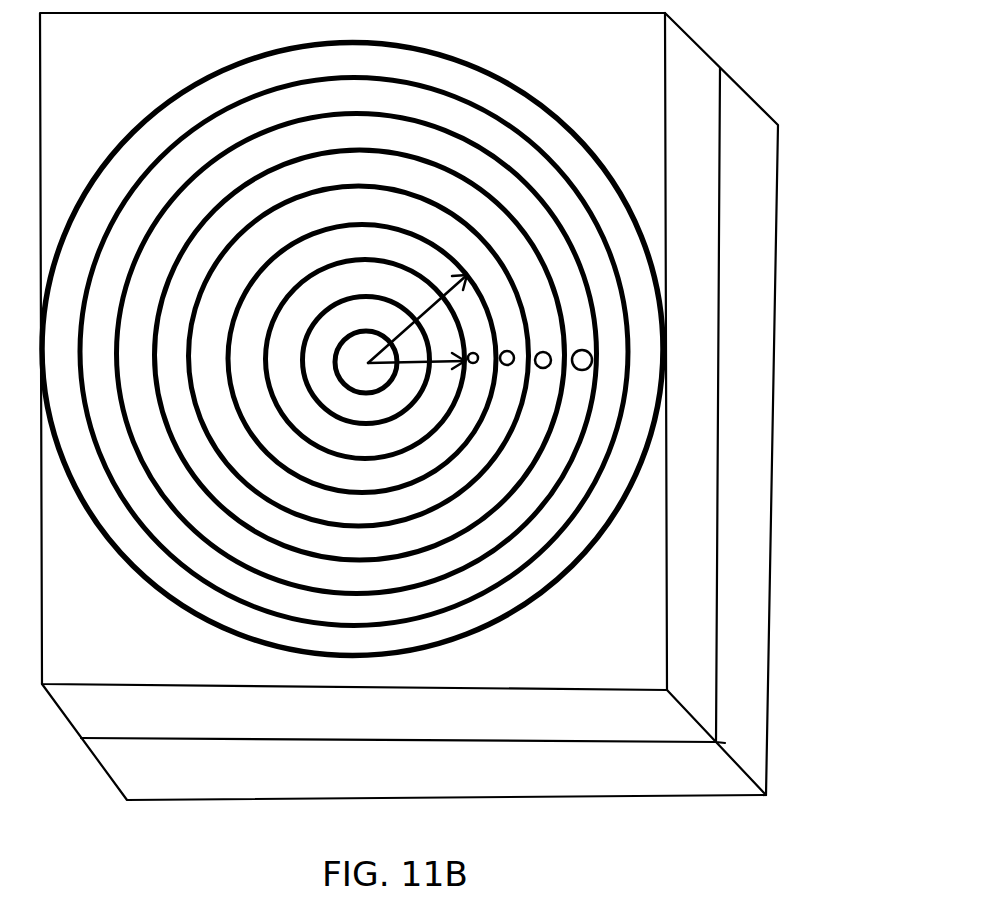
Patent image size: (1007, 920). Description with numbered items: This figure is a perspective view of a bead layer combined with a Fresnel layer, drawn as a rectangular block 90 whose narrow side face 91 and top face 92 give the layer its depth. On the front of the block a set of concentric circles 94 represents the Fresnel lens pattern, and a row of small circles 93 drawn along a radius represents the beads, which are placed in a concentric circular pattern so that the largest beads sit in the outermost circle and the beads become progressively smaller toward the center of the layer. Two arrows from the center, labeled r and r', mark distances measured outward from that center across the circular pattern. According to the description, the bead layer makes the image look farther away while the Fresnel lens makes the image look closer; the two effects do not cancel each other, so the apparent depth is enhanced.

The lens block 90 is at (449, 406).
The side surface 91 is at (752, 243).
The top surface 92 is at (637, 67).
The zone boundary points 93 is at (475, 365).
The concentric zone rings 94 is at (640, 237).
The radius r is at (434, 605).
The inner radius r' is at (358, 570).